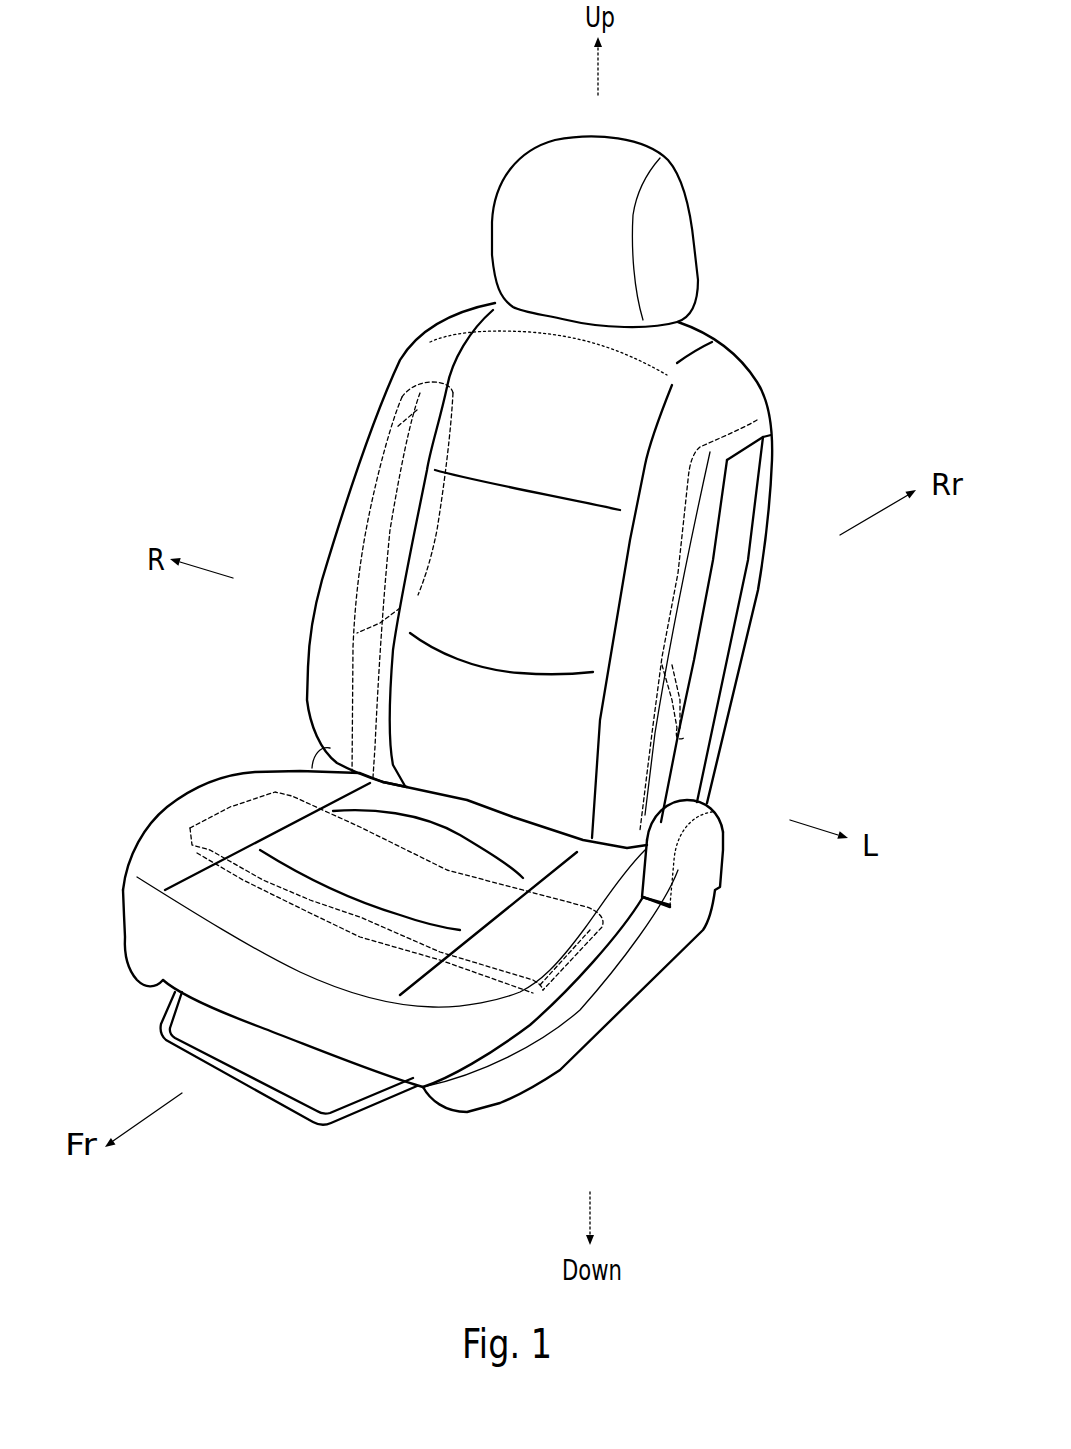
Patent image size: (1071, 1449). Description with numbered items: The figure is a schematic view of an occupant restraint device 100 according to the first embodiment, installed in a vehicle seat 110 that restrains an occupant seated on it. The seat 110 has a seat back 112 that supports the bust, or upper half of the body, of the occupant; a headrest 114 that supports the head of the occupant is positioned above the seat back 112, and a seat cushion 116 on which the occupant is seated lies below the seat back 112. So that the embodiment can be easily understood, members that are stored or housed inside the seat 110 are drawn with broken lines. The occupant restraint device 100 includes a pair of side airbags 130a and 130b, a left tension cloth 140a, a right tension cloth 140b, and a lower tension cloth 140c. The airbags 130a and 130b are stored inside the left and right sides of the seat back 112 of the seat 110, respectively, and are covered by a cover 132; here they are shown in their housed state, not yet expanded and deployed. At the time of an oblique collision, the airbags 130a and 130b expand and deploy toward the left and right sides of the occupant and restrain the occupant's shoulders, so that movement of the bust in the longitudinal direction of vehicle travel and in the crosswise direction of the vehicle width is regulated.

The occupant restraint device 100 is at (503, 649).
The vehicle seat 110 is at (546, 553).
The seat back 112 is at (740, 383).
The headrest 114 is at (680, 208).
The seat cushion 116 is at (423, 974).
The airbag 130a is at (757, 420).
The airbag 130b is at (420, 388).
The cover 132 is at (733, 590).
The left tension cloth 140a is at (685, 740).
The right tension cloth 140b is at (352, 682).
The lower tension cloth 140c is at (480, 987).